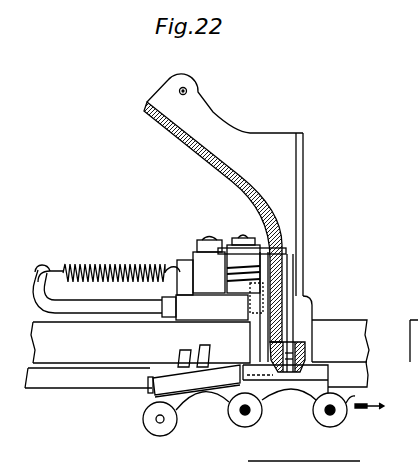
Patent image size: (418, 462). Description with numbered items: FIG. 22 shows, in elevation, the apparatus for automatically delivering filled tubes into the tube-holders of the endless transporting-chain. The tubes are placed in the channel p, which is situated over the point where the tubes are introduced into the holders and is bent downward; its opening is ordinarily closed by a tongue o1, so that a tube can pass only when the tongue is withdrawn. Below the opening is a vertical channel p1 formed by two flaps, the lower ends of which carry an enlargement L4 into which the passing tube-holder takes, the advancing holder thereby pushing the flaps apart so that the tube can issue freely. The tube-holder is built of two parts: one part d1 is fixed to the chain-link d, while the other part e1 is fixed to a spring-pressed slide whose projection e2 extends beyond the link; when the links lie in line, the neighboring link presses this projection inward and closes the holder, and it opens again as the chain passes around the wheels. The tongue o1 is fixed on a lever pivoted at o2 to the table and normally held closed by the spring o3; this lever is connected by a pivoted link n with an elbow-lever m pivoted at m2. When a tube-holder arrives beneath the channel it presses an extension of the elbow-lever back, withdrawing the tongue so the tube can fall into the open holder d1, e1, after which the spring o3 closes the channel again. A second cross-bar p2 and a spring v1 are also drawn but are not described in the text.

The channel p is at (228, 218).
The vertical channel p1 is at (284, 278).
The cross bar p2 is at (286, 243).
The tongue o1 is at (254, 240).
The pivot of lever o2 is at (245, 232).
The spring o3 is at (403, 280).
The pivoted link n is at (218, 248).
The elbow-lever m is at (224, 287).
The pivot of elbow-lever m2 is at (184, 262).
The spring v1 is at (93, 265).
The enlargement L4 is at (300, 345).
The chain-link d is at (177, 412).
The tube-holder part d1 is at (305, 360).
The tube-holder part e1 is at (178, 353).
The projection of slide e2 is at (152, 383).